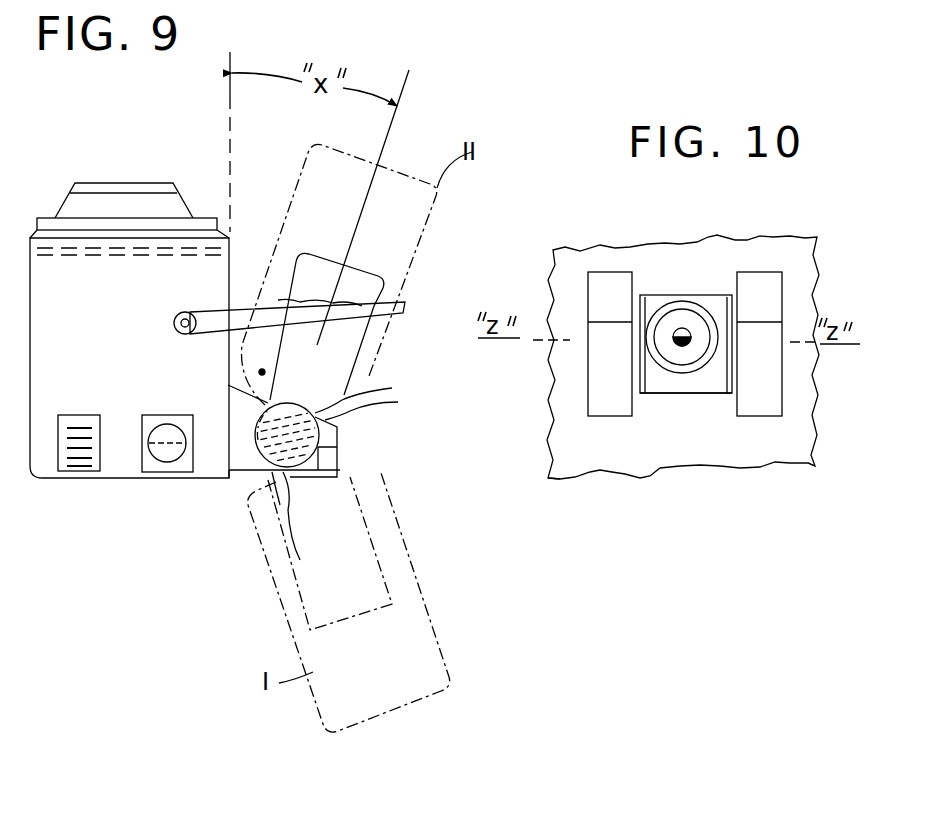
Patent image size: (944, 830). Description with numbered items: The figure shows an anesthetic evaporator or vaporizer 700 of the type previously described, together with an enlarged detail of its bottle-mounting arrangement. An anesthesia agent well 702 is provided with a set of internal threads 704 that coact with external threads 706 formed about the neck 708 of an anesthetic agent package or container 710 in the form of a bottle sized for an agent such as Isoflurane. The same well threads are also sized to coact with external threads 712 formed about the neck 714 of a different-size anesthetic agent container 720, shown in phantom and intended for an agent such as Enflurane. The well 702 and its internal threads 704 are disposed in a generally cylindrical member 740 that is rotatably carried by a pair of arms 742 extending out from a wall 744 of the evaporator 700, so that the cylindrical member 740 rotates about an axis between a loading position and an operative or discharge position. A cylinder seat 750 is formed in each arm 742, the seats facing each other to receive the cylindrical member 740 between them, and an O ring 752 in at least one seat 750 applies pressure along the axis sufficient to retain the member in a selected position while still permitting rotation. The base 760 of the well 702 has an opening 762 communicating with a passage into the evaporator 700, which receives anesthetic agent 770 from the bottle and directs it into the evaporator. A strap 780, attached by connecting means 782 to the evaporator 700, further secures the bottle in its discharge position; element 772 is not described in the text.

In FIG. 9, the anesthetic evaporator 700 is at (165, 150).
In FIG. 9, the anesthesia agent well 702 is at (335, 445).
In FIG. 10, the anesthesia agent well 702 is at (685, 315).
In FIG. 9, the internal threads 704 is at (358, 447).
In FIG. 10, the internal threads 704 is at (695, 372).
In FIG. 9, the external threads 706 is at (264, 375).
In FIG. 9, the neck 708 is at (392, 388).
In FIG. 9, the anesthetic agent package or container 710 is at (353, 341).
In FIG. 9, the external threads 712 is at (307, 387).
In FIG. 9, the neck 714 is at (398, 402).
In FIG. 9, the anesthetic agent package or container 720 is at (420, 260).
In FIG. 9, the cylindrical member 740 is at (340, 478).
In FIG. 10, the cylindrical member 740 is at (672, 397).
In FIG. 9, the arms 742 is at (242, 466).
In FIG. 10, the arms 742 is at (600, 404).
In FIG. 9, the wall 744 is at (163, 288).
In FIG. 10, the wall 744 is at (572, 267).
In FIG. 9, the cylinder seat 750 is at (345, 467).
In FIG. 10, the cylinder seat 750 is at (737, 342).
In FIG. 9, the O ring 752 is at (290, 476).
In FIG. 10, the O ring 752 is at (670, 303).
In FIG. 9, the base 760 is at (300, 560).
In FIG. 10, the base 760 is at (675, 330).
In FIG. 10, the opening 762 is at (703, 307).
In FIG. 9, the anesthetic agent 770 is at (313, 290).
In FIG. 9, the partition 772 is at (357, 277).
In FIG. 9, the strap 780 is at (240, 314).
In FIG. 9, the connecting means 782 is at (174, 326).